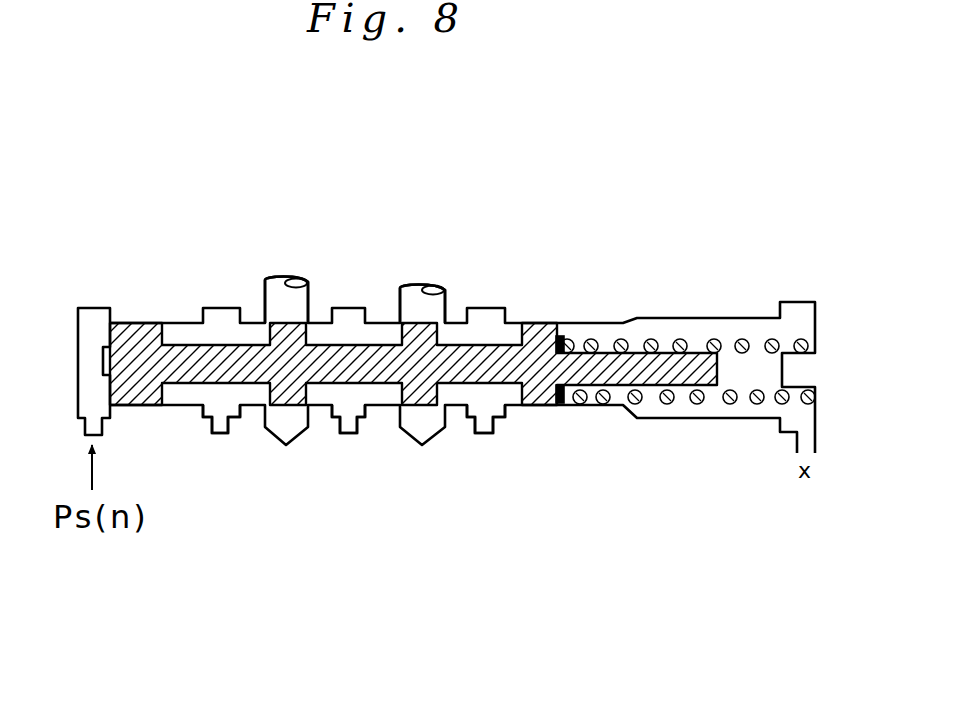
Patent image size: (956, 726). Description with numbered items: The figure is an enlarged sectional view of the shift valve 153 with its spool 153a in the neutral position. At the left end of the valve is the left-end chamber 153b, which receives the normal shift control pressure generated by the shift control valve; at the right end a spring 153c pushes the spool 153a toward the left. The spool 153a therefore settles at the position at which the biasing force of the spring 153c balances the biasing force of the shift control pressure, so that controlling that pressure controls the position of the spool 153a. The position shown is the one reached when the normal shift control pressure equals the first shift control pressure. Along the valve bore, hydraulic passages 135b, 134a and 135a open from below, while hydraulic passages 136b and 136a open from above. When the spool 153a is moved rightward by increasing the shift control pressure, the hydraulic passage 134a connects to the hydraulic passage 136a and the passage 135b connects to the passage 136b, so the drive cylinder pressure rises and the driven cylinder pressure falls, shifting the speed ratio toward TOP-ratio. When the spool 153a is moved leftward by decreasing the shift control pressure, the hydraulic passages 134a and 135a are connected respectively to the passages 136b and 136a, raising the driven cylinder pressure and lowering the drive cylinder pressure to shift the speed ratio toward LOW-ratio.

The shift valve 153 is at (598, 214).
The spool 153a is at (350, 360).
The left-end chamber 153b is at (93, 330).
The spring 153c is at (653, 347).
The hydraulic passage 136a is at (425, 285).
The hydraulic passage 136b is at (288, 277).
The hydraulic passage 135a is at (483, 547).
The hydraulic passage 135b is at (483, 507).
The hydraulic passage 134a is at (348, 547).